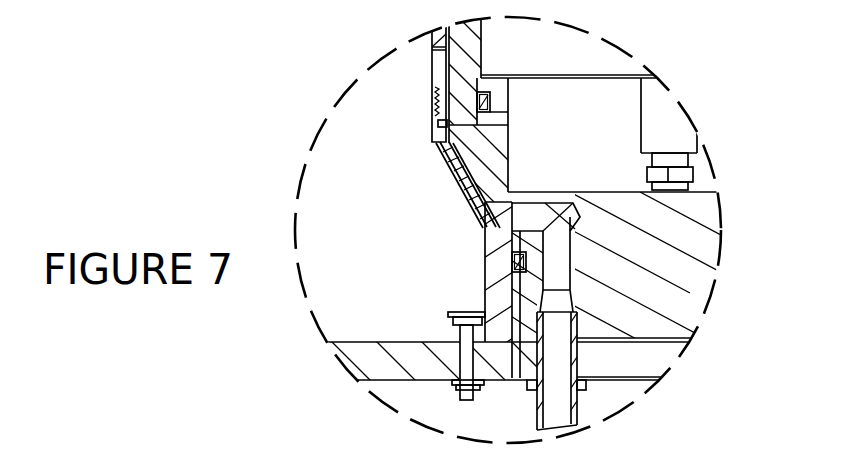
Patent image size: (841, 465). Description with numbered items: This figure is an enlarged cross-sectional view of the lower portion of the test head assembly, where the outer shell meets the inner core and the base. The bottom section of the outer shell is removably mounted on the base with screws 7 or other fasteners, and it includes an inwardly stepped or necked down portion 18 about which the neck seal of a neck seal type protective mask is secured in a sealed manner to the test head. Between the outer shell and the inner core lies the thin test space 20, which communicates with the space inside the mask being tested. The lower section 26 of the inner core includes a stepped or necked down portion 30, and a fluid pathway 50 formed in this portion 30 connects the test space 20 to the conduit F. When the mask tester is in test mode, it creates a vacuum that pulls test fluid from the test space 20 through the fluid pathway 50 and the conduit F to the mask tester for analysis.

The lower section 26 is at (434, 143).
The test space 20 is at (473, 189).
The inwardly stepped or necked down portion 18 is at (478, 266).
The screw 7 is at (480, 310).
The fluid pathway 50 is at (560, 262).
The stepped or necked down portion 30 is at (688, 311).
The conduit F is at (584, 395).